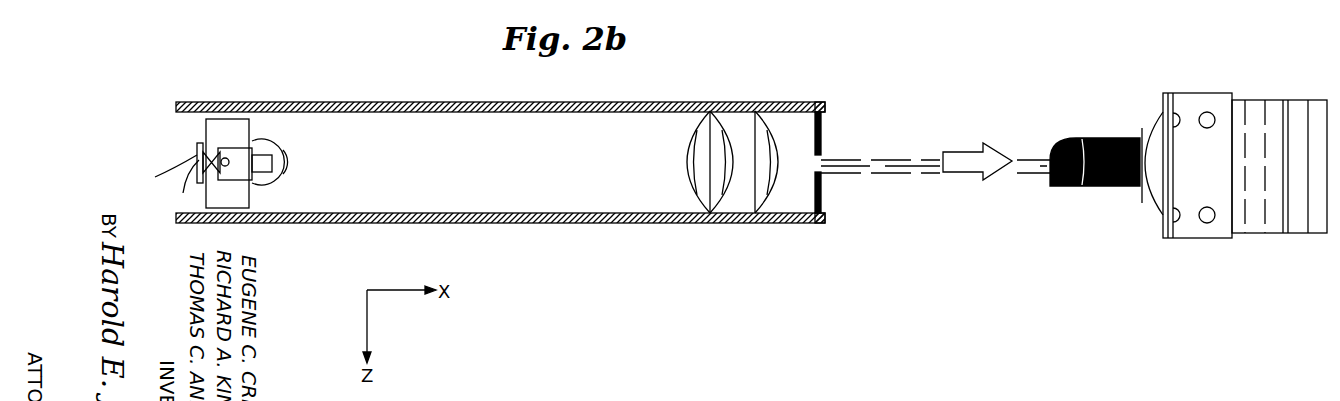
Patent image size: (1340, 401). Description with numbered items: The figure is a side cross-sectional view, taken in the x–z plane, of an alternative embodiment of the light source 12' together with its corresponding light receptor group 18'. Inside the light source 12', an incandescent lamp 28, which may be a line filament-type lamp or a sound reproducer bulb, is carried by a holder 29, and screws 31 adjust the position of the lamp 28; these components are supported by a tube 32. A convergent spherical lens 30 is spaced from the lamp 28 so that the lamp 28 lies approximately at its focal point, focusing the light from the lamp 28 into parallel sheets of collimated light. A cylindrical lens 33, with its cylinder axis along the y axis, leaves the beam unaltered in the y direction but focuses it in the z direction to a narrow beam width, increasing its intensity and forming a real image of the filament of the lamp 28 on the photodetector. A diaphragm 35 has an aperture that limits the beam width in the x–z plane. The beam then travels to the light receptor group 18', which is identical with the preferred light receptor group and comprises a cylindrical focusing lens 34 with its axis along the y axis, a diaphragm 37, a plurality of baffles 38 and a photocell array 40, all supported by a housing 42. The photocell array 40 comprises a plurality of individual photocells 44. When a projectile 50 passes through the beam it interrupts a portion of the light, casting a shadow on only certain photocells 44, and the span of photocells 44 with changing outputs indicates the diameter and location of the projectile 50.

The light source 12' is at (529, 163).
The light receptor group 18' is at (1221, 154).
The incandescent lamp 28 is at (237, 170).
The holder 29 is at (238, 128).
The spherical lens 30 is at (695, 197).
The screws 31 is at (222, 158).
The tube 32 is at (498, 208).
The cylindrical lens 33 is at (758, 197).
The cylindrical focusing lens 34 is at (1160, 128).
The diaphragm 35 is at (820, 187).
The diaphragm 37 is at (1140, 192).
The baffles 38 is at (1237, 115).
The photocell array 40 is at (1318, 227).
The housing 42 is at (1253, 230).
The photocells 44 is at (1298, 230).
The projectile 50 is at (1061, 144).